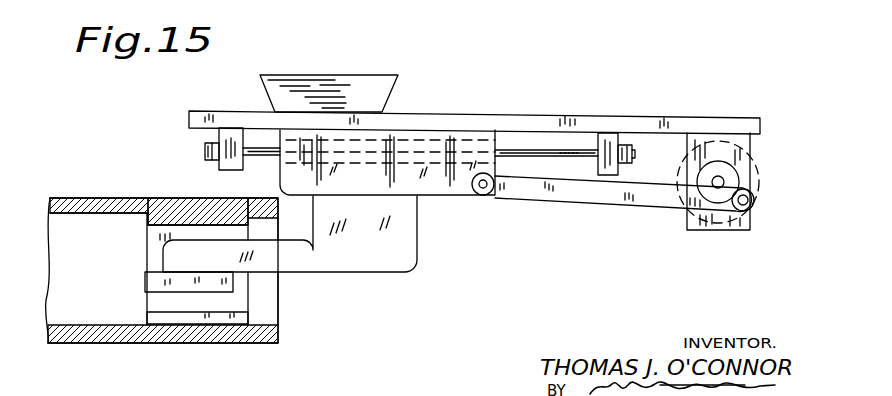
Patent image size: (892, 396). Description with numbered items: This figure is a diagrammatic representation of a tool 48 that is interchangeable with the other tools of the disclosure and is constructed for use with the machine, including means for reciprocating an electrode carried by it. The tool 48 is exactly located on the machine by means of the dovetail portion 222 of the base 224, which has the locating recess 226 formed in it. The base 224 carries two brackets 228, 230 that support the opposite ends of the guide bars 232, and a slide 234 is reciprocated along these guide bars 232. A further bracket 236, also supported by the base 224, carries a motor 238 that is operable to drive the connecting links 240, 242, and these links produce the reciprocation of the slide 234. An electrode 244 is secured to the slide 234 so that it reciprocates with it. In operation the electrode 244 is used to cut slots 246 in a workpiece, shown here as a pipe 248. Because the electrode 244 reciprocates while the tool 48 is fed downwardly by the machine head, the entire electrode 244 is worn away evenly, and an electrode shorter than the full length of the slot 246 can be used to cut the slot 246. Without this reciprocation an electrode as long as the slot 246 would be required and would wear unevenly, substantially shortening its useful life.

The tool 48 is at (382, 321).
The dovetail portion 222 is at (300, 46).
The base 224 is at (597, 92).
The locating recess 226 is at (325, 80).
The bracket 228 is at (229, 130).
The bracket 230 is at (619, 136).
The guide bars 232 is at (506, 147).
The slide 234 is at (443, 197).
The bracket 236 is at (728, 140).
The motor 238 is at (758, 176).
The connecting link 240 is at (755, 190).
The connecting link 242 is at (576, 203).
The electrode 244 is at (233, 284).
The slot 246 is at (165, 312).
The pipe 248 is at (112, 342).